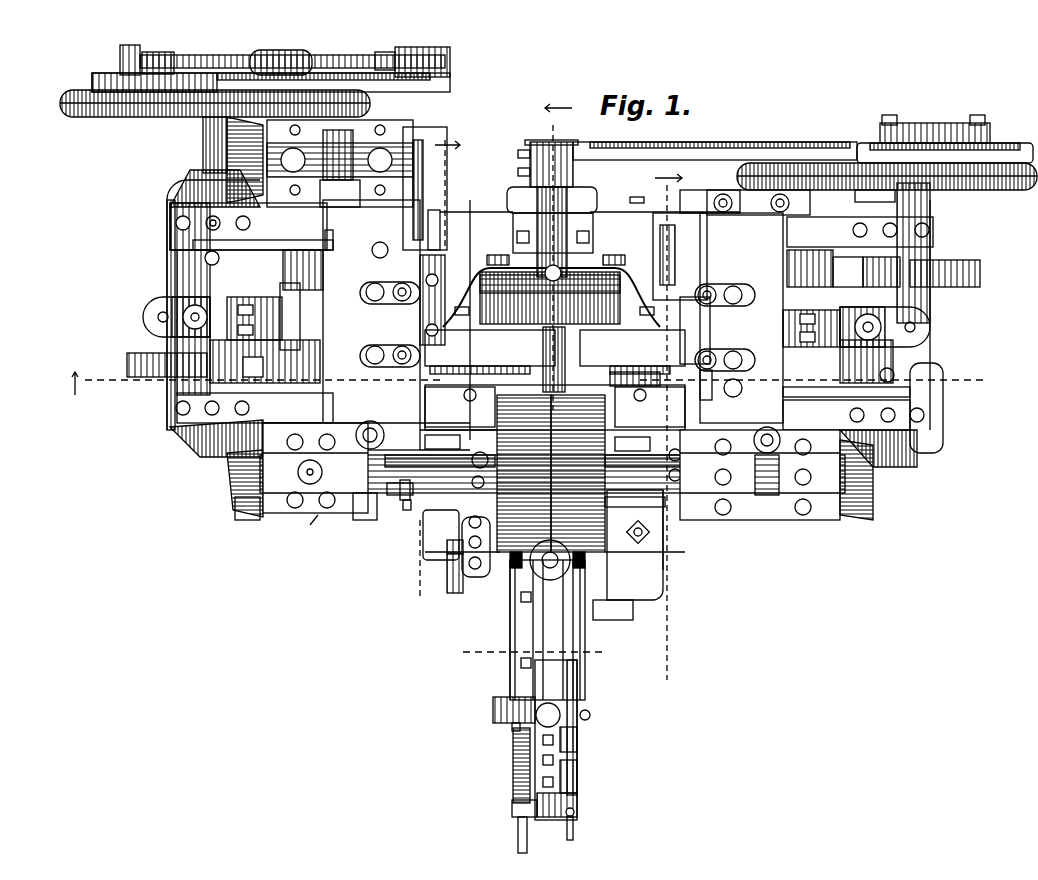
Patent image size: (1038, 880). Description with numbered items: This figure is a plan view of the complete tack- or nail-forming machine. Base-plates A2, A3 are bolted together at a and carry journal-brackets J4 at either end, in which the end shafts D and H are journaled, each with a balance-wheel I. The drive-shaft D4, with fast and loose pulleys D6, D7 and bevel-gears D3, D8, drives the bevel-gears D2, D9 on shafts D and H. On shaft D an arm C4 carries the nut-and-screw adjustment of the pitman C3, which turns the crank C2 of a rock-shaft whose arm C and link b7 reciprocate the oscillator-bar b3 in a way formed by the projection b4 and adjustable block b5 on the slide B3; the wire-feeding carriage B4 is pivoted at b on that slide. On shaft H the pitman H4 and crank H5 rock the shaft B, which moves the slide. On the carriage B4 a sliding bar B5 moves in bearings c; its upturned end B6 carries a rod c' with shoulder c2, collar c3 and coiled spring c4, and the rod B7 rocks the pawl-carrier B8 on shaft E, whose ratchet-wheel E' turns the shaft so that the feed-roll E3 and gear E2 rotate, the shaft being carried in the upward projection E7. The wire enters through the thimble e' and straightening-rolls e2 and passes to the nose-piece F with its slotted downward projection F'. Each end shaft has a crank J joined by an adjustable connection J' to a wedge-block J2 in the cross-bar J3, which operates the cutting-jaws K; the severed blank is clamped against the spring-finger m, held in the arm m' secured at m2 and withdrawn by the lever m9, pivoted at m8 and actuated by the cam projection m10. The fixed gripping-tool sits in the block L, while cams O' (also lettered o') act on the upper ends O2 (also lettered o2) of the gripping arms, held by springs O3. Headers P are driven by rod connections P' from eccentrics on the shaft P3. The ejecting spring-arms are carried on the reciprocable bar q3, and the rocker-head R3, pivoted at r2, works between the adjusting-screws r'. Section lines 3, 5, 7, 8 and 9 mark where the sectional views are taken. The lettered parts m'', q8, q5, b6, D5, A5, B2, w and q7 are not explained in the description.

The arm C4 is at (122, 60).
The pitman C3 is at (200, 62).
The crank C2 is at (405, 80).
The balance-wheel I is at (130, 100).
The shaft D is at (205, 158).
The rod connection P' is at (523, 260).
The spring-finger m is at (425, 184).
The header P is at (562, 258).
The section line 7 7 is at (436, 365).
The shaft P3 is at (320, 185).
The journal-bracket J4 is at (551, 316).
The arm m' is at (154, 315).
The lever m9 is at (193, 245).
The securing point of arm m2 is at (177, 256).
The cam projection m10 is at (205, 260).
The pivot of lever m8 is at (345, 243).
The stud m'' is at (570, 312).
The cross-bar J3 is at (553, 325).
The crank J is at (543, 313).
The adjustable connection J' is at (533, 305).
The cutting-jaw K is at (527, 317).
The wedge-block J2 is at (300, 320).
The cam O' is at (167, 356).
The upper end of arm O2 is at (253, 367).
The section line 3 3 is at (530, 383).
The bevel-gear D2 is at (180, 448).
The bevel-gear D3 is at (230, 470).
The arm C is at (232, 500).
The drive-shaft D4 is at (358, 515).
The link b7 is at (310, 525).
The oscillator-bar b3 is at (392, 497).
The pin q8 is at (412, 500).
The pin q5 is at (412, 512).
The upward projection E7 is at (450, 550).
The ratchet-wheel E' is at (442, 562).
The gear E2 is at (470, 590).
The bearing c is at (493, 633).
The rod B7 is at (515, 620).
The sliding bar B5 is at (510, 632).
The section line 9 9 is at (528, 652).
The upturned end B6 is at (500, 700).
The collar c3 is at (512, 730).
The coiled spring c4 is at (513, 760).
The shoulder c2 is at (512, 808).
The rod c' is at (512, 835).
The pawl-carrier B8 is at (458, 495).
The bolt a is at (537, 320).
The bolt b6 is at (479, 464).
The shaft D5 is at (540, 474).
The section line 5 5 is at (606, 398).
The rock-shaft B is at (562, 140).
The crank H5 is at (760, 143).
The base-plate A2 is at (478, 212).
The base-plate A3 is at (628, 212).
The central pivot r2 is at (558, 222).
The section line 8 8 is at (673, 427).
The reciprocable bar q3 is at (683, 190).
The adjusting-screw r' is at (555, 251).
The rocker-head R3 is at (551, 296).
The block L is at (584, 352).
The nose-piece F is at (558, 359).
The slotted downward projection F' is at (635, 363).
The fast pulley D6 is at (555, 468).
The loose pulley D7 is at (578, 473).
The projection b4 is at (667, 495).
The adjustable block b5 is at (660, 510).
The frame member A5 is at (663, 560).
The feed-roll E3 is at (540, 566).
The shaft E is at (565, 569).
The slide B3 is at (655, 590).
The rail B2 is at (580, 635).
The wire-feeding carriage B4 is at (575, 645).
The pivot b is at (560, 712).
The straightening-roll e2 is at (577, 742).
The thimble e' is at (567, 810).
The pin w is at (573, 835).
The pitman H4 is at (945, 133).
The shaft H is at (1000, 150).
The pin q7 is at (930, 200).
The upper end of arm o2 is at (785, 238).
The cam o' is at (881, 272).
The spring O3 is at (975, 272).
The bevel-gear D9 is at (915, 458).
The bevel-gear D8 is at (870, 508).